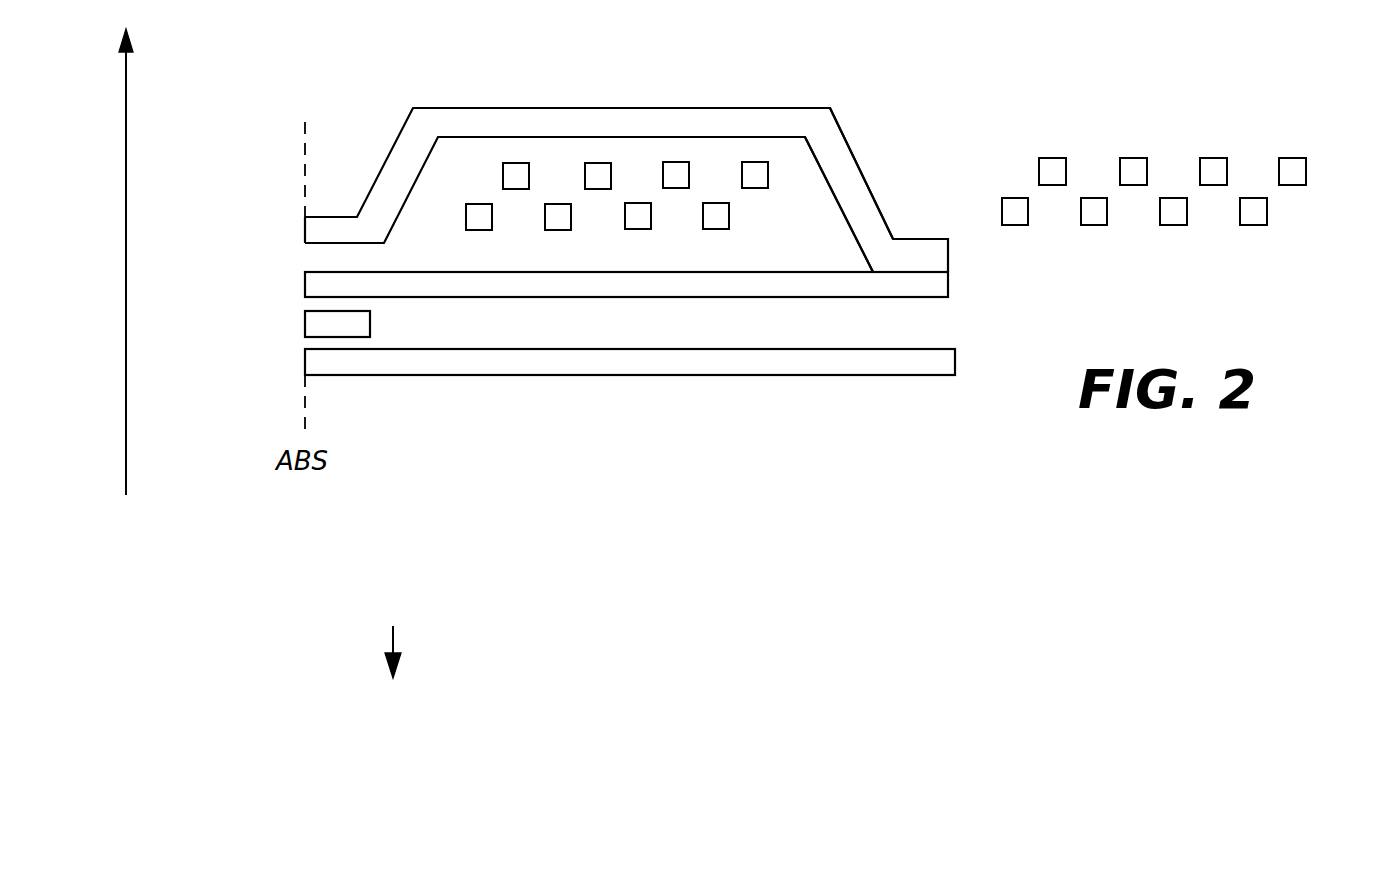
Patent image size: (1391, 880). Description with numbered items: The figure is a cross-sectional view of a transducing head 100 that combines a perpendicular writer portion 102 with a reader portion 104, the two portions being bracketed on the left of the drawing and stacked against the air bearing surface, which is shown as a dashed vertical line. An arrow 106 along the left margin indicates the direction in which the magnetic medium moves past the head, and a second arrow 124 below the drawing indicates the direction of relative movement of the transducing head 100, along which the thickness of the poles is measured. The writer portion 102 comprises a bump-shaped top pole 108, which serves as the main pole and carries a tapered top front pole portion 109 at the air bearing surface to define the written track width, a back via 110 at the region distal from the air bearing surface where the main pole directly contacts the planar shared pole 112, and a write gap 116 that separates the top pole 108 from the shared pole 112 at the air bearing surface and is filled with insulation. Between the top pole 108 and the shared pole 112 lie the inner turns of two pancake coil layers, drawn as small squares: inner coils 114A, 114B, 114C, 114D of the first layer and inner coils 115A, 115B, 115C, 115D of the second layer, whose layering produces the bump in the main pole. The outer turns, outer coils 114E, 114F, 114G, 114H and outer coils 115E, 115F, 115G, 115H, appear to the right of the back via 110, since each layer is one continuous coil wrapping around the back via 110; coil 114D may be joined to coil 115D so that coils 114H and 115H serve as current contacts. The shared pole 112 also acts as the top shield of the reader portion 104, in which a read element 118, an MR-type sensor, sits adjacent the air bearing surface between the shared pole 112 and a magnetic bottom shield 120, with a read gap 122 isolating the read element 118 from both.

The transducing head 100 is at (368, 108).
The perpendicular writer portion 102 is at (253, 110).
The reader portion 104 is at (211, 267).
The arrow 106 is at (115, 292).
The top pole 108 is at (393, 178).
The top front pole portion 109 is at (312, 227).
The back via 110 is at (870, 202).
The shared pole 112 is at (313, 282).
The inner coil 114A is at (515, 235).
The inner coil 114B is at (595, 235).
The inner coil 114C is at (642, 217).
The inner coil 114D is at (718, 212).
The outer coil 114E is at (1020, 213).
The outer coil 114F is at (1098, 222).
The outer coil 114G is at (1177, 213).
The outer coil 114H is at (1258, 215).
The inner coil 115A is at (515, 175).
The inner coil 115B is at (597, 178).
The inner coil 115C is at (675, 175).
The inner coil 115D is at (755, 170).
The outer coil 115E is at (1050, 170).
The outer coil 115F is at (1130, 165).
The outer coil 115G is at (1212, 165).
The outer coil 115H is at (1295, 167).
The write gap 116 is at (318, 258).
The read element 118 is at (310, 327).
The bottom shield 120 is at (545, 365).
The read gap 122 is at (445, 333).
The arrow 124 is at (406, 642).